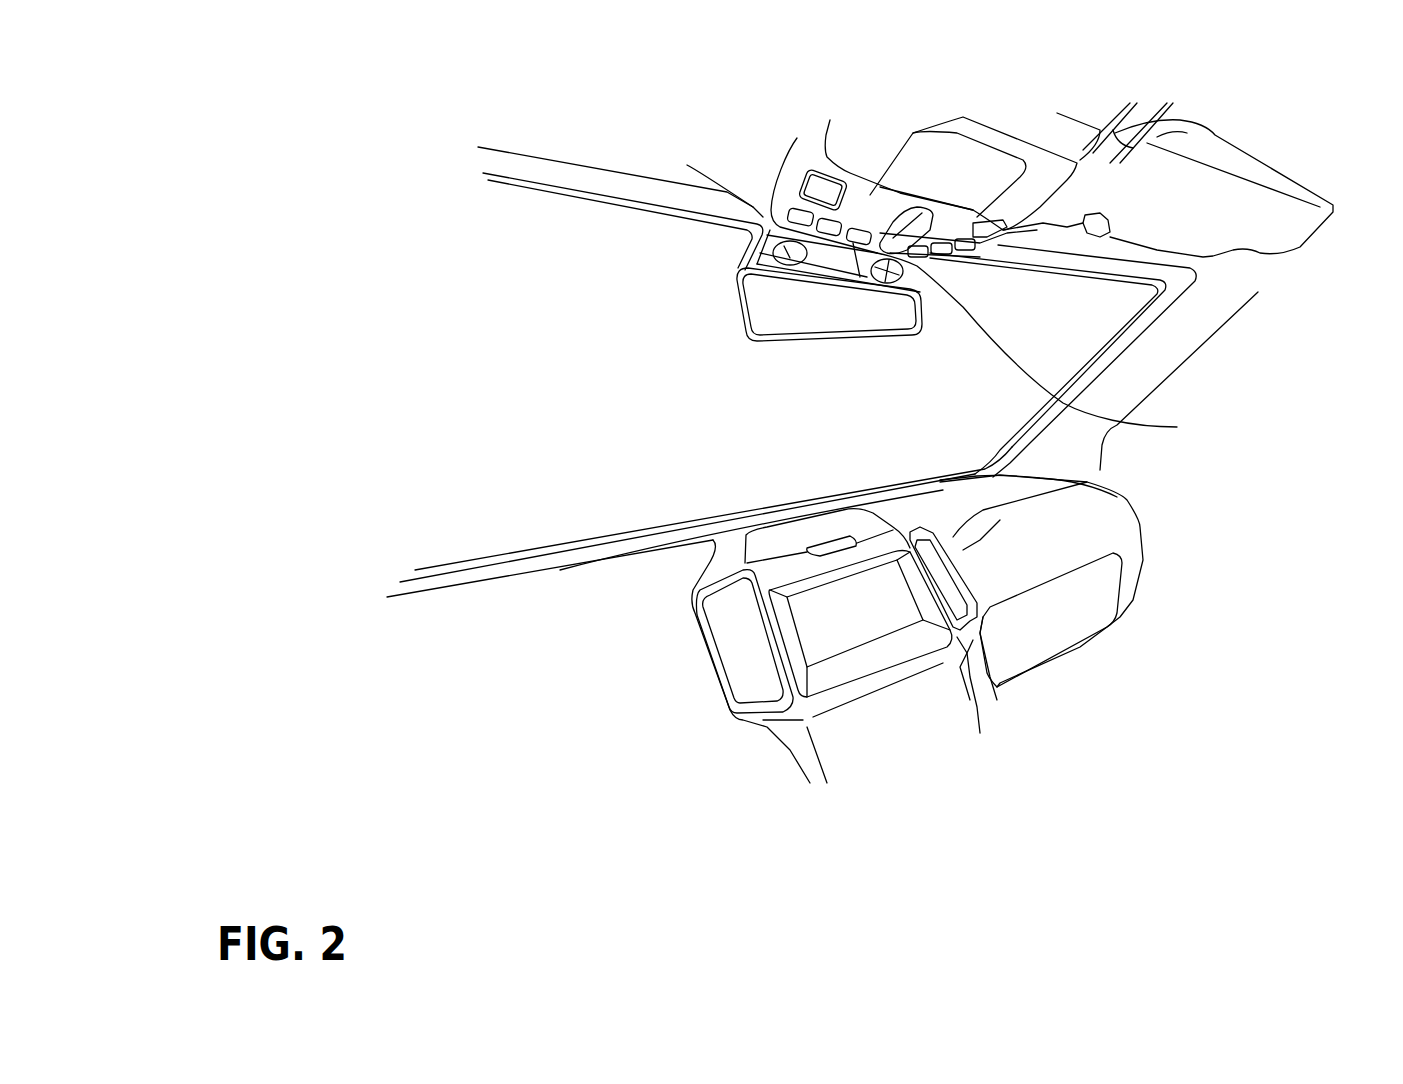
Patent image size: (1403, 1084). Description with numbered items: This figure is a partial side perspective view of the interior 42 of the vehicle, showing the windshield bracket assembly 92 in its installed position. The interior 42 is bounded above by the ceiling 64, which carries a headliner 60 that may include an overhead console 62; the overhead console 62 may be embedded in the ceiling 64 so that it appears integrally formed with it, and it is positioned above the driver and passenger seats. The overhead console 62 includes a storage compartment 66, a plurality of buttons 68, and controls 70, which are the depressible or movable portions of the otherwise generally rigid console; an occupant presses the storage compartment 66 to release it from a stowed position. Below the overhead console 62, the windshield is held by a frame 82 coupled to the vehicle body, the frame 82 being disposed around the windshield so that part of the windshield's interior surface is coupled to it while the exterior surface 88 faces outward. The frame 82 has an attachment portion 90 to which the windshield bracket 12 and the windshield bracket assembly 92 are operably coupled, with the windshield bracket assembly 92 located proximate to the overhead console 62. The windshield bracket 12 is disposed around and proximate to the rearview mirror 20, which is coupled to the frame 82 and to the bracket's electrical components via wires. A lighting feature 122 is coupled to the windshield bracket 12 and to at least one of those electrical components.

The windshield bracket 12 is at (757, 237).
The rearview mirror 20 is at (772, 307).
The interior 42 is at (602, 495).
The headliner 60 is at (1213, 263).
The overhead console 62 is at (877, 157).
The ceiling 64 is at (1147, 155).
The storage compartment 66 is at (975, 160).
The buttons 68 is at (822, 220).
The controls 70 is at (905, 228).
The frame 82 is at (582, 165).
The exterior surface 88 is at (1090, 317).
The attachment portion 90 is at (747, 247).
The windshield bracket assembly 92 is at (718, 269).
The lighting feature 122 is at (1067, 361).